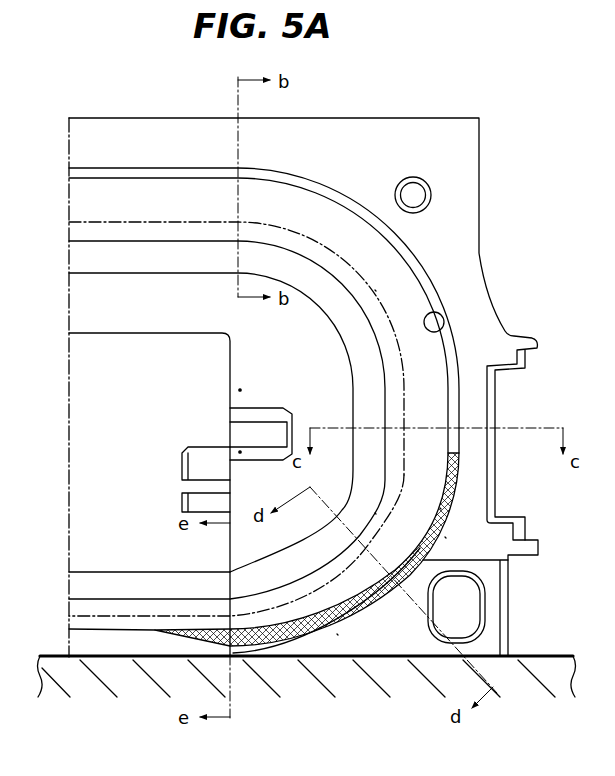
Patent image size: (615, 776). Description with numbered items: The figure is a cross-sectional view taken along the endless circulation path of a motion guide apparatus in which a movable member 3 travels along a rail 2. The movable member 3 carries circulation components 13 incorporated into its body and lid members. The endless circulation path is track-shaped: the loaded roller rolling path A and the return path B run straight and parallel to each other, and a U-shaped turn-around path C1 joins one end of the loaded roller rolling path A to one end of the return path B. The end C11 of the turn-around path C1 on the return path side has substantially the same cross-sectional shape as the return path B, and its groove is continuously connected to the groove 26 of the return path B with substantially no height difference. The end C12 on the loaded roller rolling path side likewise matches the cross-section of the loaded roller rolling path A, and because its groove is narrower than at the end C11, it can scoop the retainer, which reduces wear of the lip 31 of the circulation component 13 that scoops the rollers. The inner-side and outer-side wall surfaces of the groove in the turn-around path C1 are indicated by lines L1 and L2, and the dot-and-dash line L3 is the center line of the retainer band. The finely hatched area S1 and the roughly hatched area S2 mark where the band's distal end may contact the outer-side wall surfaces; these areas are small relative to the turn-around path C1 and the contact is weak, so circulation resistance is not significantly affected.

The rail 2 is at (534, 654).
The movable member 3 is at (356, 114).
The circulation component 13 is at (433, 135).
The groove 26 is at (100, 203).
The lip 31 is at (332, 637).
The loaded roller rolling path A is at (125, 573).
The return path B is at (108, 270).
The turn-around path C1 is at (443, 336).
The end of turn-around path on return path side C11 is at (268, 204).
The end of turn-around path on loaded roller rolling path side C12 is at (270, 622).
The inner-side wall surface line L1 is at (375, 513).
The outer-side wall surface line L2 is at (440, 508).
The center line of band L3 is at (375, 290).
The contact area S1 is at (445, 537).
The contact area S2 is at (337, 634).